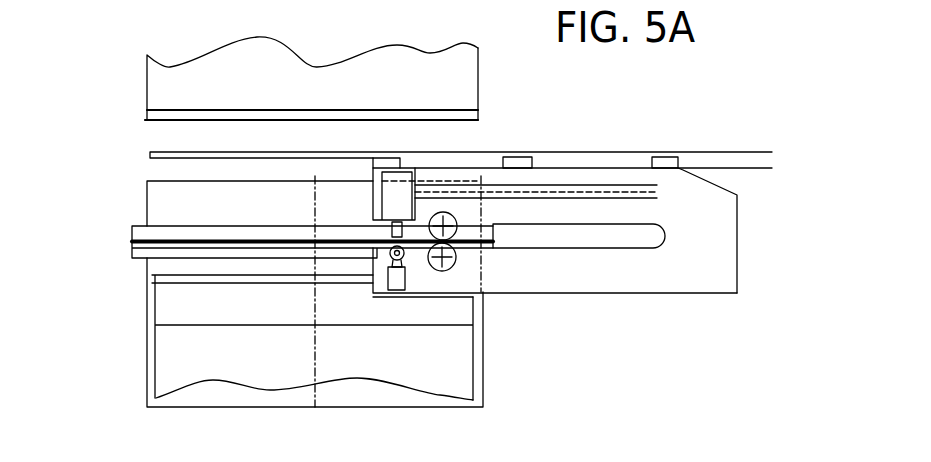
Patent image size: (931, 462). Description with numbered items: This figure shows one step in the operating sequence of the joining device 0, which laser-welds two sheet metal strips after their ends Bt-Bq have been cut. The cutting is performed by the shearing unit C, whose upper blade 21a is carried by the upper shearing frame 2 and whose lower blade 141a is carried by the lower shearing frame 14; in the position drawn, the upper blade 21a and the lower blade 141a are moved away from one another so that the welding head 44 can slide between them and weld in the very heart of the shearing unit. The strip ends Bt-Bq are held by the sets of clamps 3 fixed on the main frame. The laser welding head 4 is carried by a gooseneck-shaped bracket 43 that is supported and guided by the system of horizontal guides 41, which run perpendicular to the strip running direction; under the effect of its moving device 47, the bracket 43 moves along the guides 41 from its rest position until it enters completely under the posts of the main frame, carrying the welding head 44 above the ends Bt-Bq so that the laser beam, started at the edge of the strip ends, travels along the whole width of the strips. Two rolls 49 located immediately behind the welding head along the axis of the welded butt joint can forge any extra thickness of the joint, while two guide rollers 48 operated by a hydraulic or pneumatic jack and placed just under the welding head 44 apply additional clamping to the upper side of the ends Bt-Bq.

The joining device 0 is at (690, 360).
The upper shearing frame 2 is at (408, 84).
The sets of clamps 3 is at (133, 252).
The laser welding head 4 is at (738, 144).
The lower shearing frame 14 is at (200, 333).
The upper blade 21a is at (147, 115).
The system of horizontal guides 41 is at (538, 188).
The gooseneck-shaped bracket 43 is at (683, 193).
The welding head 44 is at (403, 187).
The moving device 47 is at (233, 155).
The guide rollers 48 is at (405, 290).
The rolls 49 is at (458, 231).
The lower blade 141a is at (152, 280).
The shearing unit C is at (312, 78).
The ends of the strips Bt-Bq is at (220, 243).